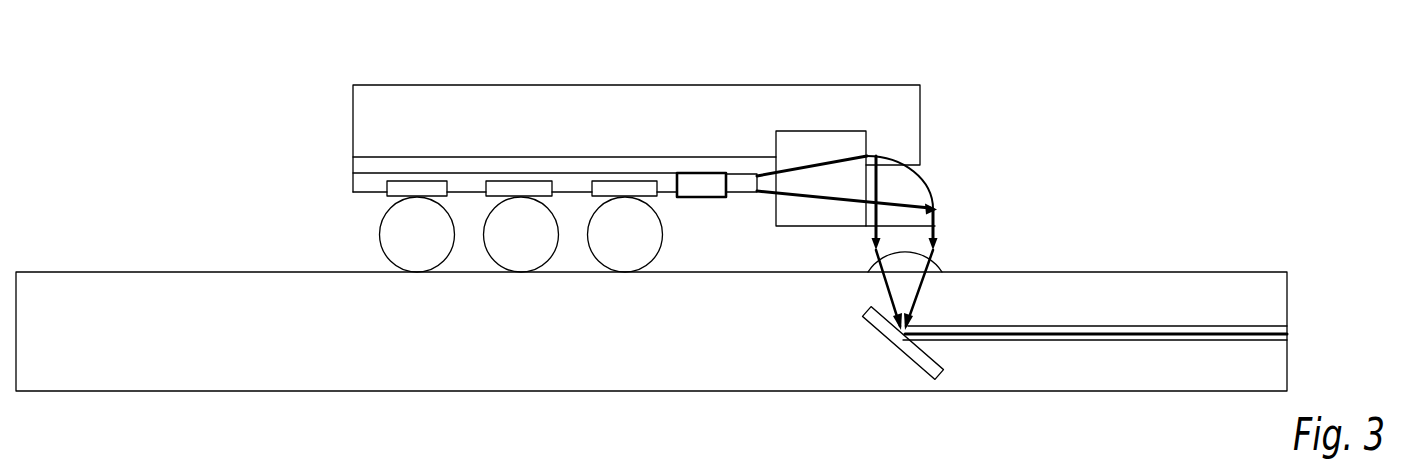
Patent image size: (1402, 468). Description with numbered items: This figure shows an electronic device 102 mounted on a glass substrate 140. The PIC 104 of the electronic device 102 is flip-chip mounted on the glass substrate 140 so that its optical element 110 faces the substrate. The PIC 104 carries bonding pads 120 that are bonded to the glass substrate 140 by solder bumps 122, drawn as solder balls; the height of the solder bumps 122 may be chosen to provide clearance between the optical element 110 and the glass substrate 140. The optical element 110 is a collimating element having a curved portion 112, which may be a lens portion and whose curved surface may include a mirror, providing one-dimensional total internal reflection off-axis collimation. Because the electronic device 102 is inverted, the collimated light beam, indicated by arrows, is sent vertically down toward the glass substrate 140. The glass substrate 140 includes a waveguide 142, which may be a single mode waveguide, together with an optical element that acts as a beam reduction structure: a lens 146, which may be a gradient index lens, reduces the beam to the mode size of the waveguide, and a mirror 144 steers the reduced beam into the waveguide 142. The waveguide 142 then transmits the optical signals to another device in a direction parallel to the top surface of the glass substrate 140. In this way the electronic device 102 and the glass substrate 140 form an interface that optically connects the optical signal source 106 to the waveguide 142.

The electronic device 102 is at (709, 142).
The PIC 104 is at (353, 105).
The optical signal source 106 is at (700, 178).
The optical element 110 is at (936, 187).
The curved portion 112 is at (882, 203).
The bonding pads 120 is at (393, 189).
The solder bumps 122 is at (379, 232).
The glass substrate 140 is at (68, 285).
The waveguide 142 is at (1097, 341).
The mirror 144 is at (900, 347).
The lens 146 is at (915, 255).